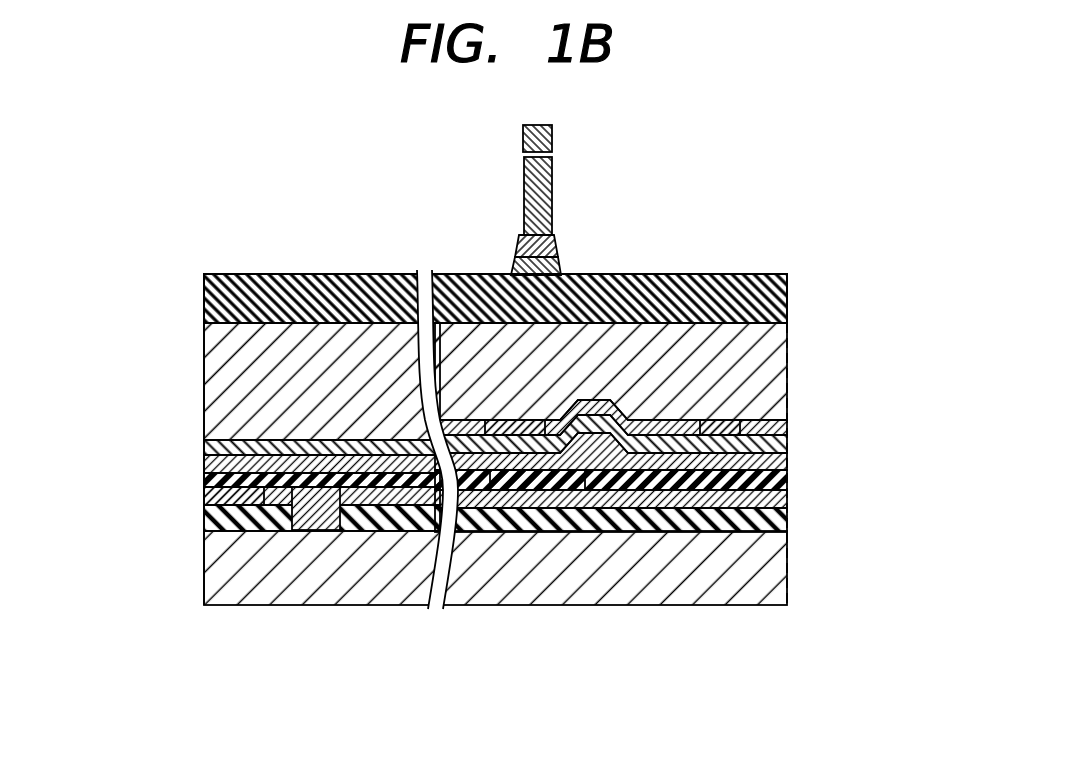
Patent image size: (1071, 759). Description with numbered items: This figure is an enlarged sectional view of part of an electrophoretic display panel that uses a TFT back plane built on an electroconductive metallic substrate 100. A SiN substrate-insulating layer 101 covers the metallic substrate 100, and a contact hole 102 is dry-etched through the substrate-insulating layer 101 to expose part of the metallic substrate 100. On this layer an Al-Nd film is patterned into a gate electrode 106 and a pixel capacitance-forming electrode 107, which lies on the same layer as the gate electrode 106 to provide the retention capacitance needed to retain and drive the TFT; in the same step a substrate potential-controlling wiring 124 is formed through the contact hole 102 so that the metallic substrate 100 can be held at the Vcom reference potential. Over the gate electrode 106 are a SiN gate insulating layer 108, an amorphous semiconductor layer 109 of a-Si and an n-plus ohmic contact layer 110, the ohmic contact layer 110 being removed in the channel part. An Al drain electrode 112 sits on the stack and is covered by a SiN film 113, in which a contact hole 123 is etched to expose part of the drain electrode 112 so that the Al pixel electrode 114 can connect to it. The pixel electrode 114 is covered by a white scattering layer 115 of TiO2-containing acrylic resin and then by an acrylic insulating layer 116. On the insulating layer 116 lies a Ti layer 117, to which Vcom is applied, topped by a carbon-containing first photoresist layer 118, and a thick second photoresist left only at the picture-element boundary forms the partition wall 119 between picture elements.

The metallic substrate 100 is at (645, 607).
The substrate-insulating layer 101 is at (205, 520).
The contact hole 102 is at (305, 522).
The gate electrode 106 is at (538, 493).
The pixel capacitance-forming electrode 107 is at (790, 515).
The gate insulating layer 108 is at (790, 497).
The amorphous semiconductor layer 109 is at (540, 418).
The ohmic contact layer 110 is at (790, 480).
The drain electrode 112 is at (790, 462).
The SiN film 113 is at (790, 441).
The pixel electrode 114 is at (795, 422).
The white scattering layer 115 is at (775, 352).
The insulating layer 116 is at (793, 296).
The Ti layer 117 is at (560, 267).
The first photoresist layer 118 is at (552, 232).
The partition wall 119 is at (552, 172).
The contact hole 123 is at (730, 425).
The substrate potential-controlling wiring 124 is at (205, 497).